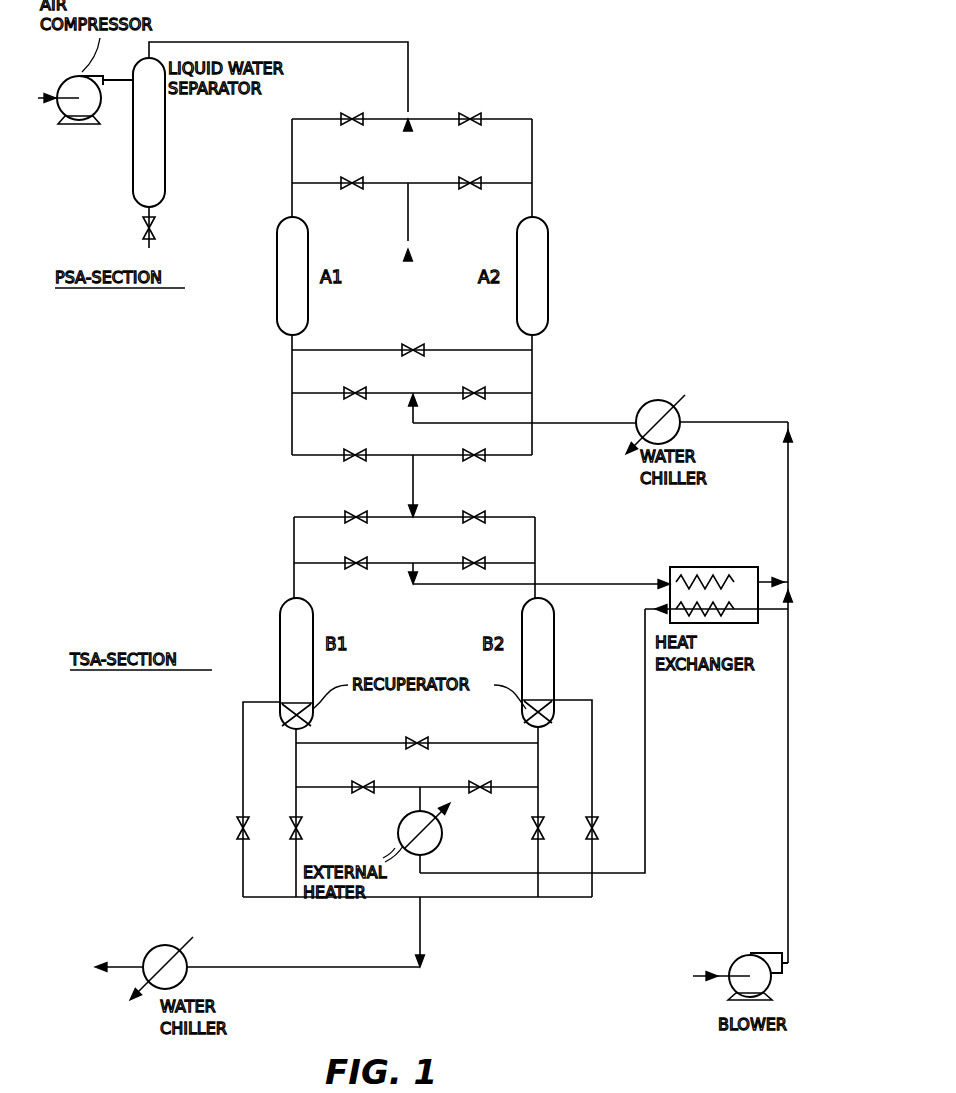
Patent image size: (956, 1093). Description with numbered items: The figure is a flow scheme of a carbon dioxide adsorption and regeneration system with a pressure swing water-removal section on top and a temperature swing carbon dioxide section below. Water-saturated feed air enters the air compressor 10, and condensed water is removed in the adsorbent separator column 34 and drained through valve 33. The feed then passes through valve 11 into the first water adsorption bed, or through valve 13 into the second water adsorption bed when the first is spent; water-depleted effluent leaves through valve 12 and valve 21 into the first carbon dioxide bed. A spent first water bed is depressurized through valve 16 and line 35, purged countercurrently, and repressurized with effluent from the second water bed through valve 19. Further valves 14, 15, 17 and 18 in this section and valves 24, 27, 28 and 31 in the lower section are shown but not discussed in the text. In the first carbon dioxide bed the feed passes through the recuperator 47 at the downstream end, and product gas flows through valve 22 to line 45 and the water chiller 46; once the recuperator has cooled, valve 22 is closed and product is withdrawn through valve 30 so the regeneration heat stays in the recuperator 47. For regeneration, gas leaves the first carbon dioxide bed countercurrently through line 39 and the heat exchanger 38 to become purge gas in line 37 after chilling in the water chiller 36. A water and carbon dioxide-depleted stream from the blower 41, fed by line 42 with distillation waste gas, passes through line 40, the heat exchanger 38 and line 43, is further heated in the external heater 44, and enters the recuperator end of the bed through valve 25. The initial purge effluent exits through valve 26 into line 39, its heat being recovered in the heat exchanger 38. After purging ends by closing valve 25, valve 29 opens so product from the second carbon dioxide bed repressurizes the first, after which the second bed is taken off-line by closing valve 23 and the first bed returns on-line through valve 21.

The air compressor 10 is at (70, 120).
The valve 11 is at (350, 110).
The valve 12 is at (352, 449).
The valve 13 is at (468, 110).
The valve 14 is at (472, 449).
The valve 15 is at (350, 386).
The valve 16 is at (350, 174).
The valve 17 is at (470, 386).
The valve 18 is at (468, 174).
The valve 19 is at (406, 344).
The valve 21 is at (355, 510).
The valve 22 is at (306, 829).
The valve 23 is at (474, 510).
The valve 24 is at (548, 833).
The valve 25 is at (359, 780).
The valve 26 is at (353, 556).
The valve 27 is at (477, 780).
The valve 28 is at (474, 556).
The valve 29 is at (413, 741).
The valve 30 is at (235, 826).
The valve 31 is at (602, 822).
The valve 33 is at (140, 231).
The adsorbent separator column 34 is at (168, 126).
The line 35 is at (406, 208).
The water chiller 36 is at (634, 410).
The line 37 is at (732, 418).
The heat exchanger 38 is at (706, 565).
The line 39 is at (616, 582).
The line 40 is at (788, 732).
The blower 41 is at (730, 960).
The line 42 is at (710, 982).
The line 43 is at (638, 652).
The external heater 44 is at (393, 830).
The line 45 is at (273, 961).
The water chiller 46 is at (147, 947).
The recuperator 47 is at (314, 713).